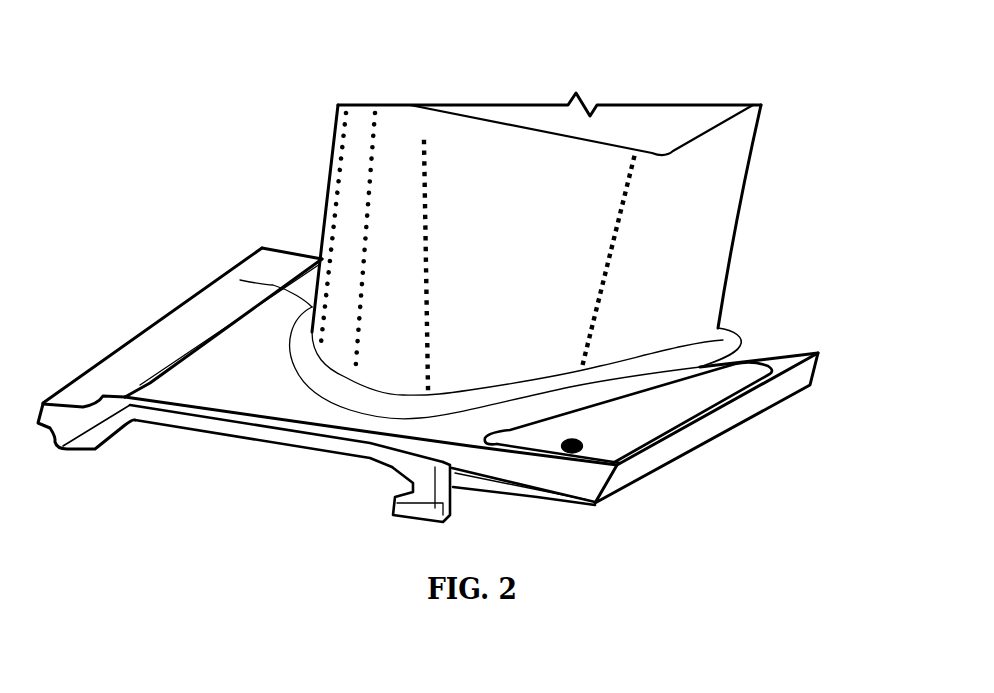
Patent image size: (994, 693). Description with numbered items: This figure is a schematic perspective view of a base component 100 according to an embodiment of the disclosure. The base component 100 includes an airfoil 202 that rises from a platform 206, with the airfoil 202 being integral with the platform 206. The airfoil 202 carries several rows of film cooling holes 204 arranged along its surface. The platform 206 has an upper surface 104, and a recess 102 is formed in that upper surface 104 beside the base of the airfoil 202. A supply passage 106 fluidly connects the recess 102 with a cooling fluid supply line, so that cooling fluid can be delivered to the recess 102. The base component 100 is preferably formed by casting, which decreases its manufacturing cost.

The base component 100 is at (773, 74).
The recess 102 is at (703, 392).
The upper surface 104 is at (205, 368).
The supply passage 106 is at (585, 440).
The airfoil 202 is at (710, 183).
The film cooling holes 204 is at (613, 240).
The platform 206 is at (622, 486).